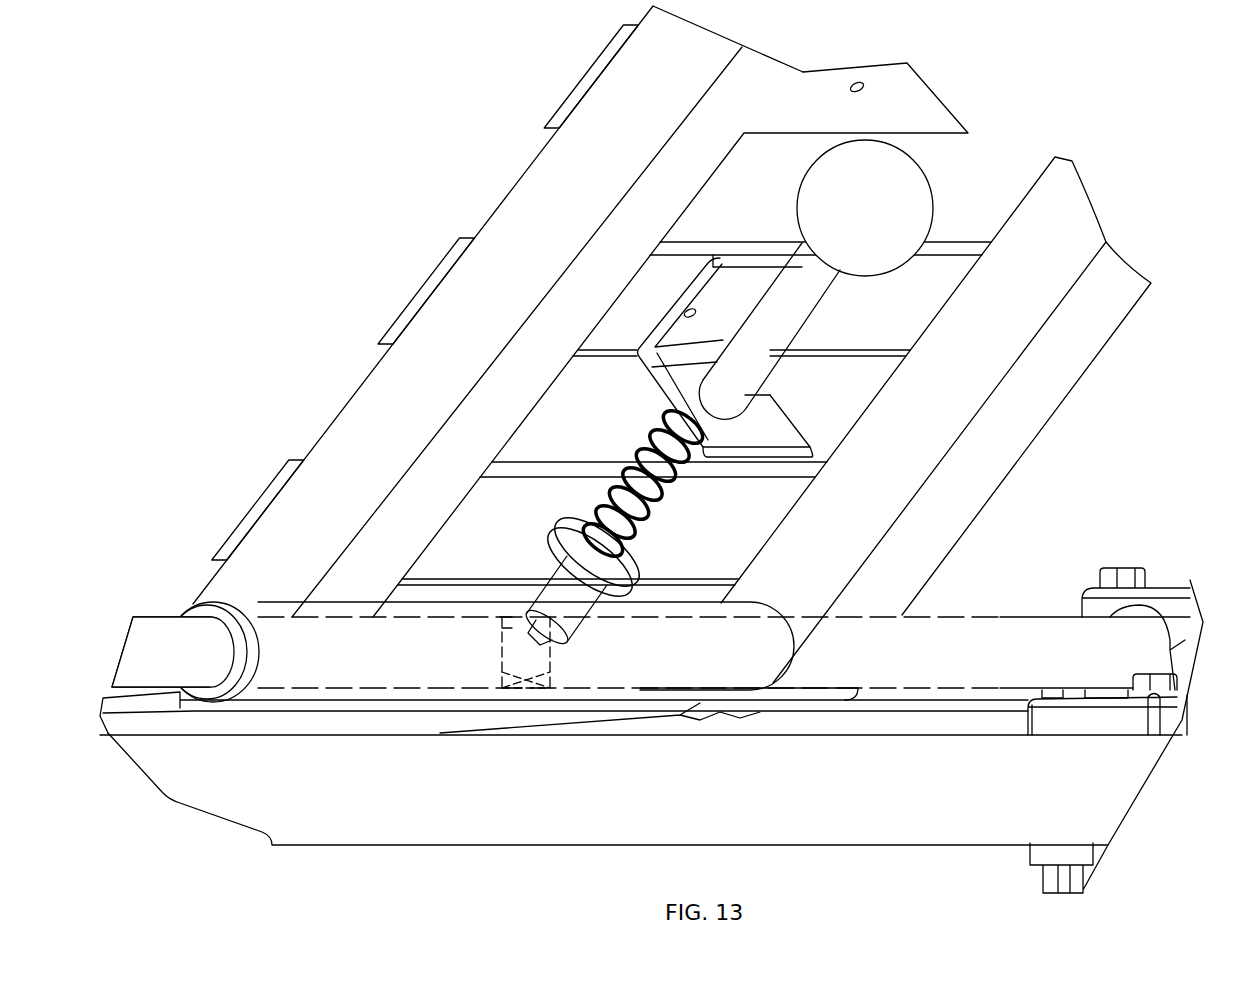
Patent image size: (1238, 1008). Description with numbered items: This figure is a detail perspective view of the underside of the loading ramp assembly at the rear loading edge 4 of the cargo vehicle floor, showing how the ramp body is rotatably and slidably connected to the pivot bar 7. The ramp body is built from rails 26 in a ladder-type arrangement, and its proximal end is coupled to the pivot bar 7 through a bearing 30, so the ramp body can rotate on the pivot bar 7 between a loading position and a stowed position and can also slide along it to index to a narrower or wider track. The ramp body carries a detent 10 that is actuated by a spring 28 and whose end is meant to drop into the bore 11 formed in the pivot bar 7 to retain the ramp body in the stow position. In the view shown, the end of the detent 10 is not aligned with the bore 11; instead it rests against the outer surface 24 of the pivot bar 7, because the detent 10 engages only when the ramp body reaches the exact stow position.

The rear loading edge 4 is at (810, 845).
The pivot bar 7 is at (187, 613).
The detent 10 is at (780, 363).
The bore 11 is at (502, 618).
The outer surface 24 is at (965, 613).
The rails 26 is at (498, 200).
The spring 28 is at (680, 508).
The bearing 30 is at (204, 604).